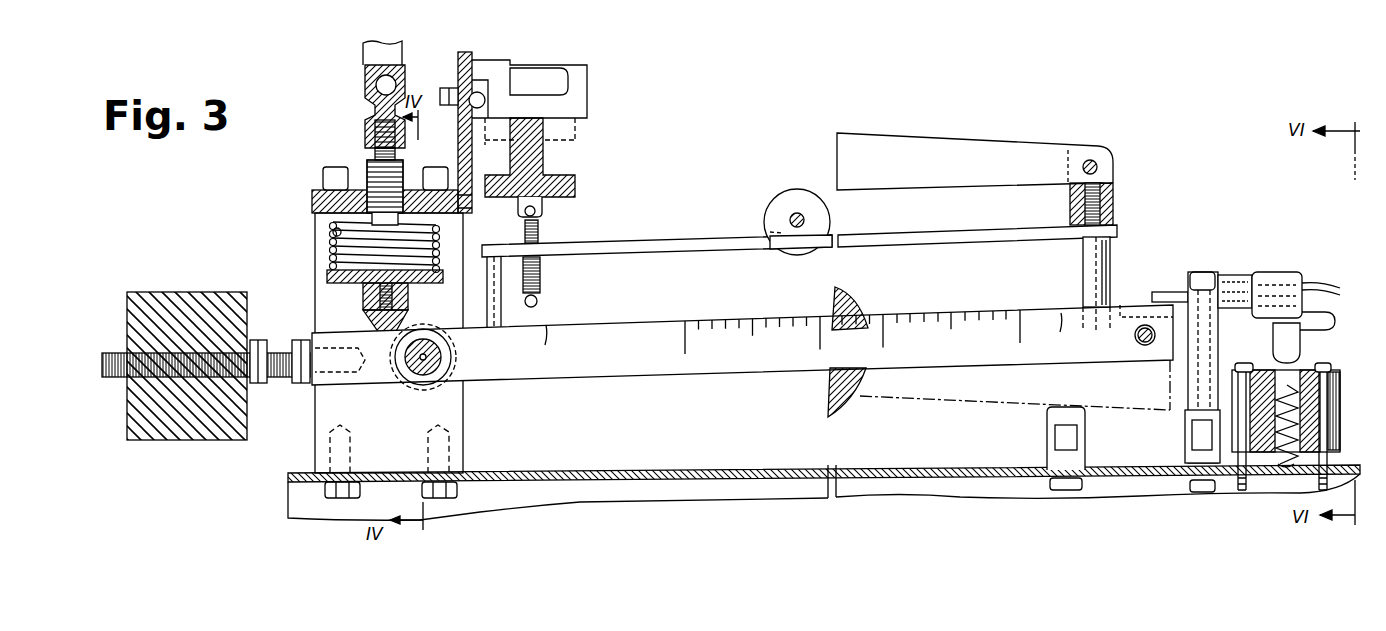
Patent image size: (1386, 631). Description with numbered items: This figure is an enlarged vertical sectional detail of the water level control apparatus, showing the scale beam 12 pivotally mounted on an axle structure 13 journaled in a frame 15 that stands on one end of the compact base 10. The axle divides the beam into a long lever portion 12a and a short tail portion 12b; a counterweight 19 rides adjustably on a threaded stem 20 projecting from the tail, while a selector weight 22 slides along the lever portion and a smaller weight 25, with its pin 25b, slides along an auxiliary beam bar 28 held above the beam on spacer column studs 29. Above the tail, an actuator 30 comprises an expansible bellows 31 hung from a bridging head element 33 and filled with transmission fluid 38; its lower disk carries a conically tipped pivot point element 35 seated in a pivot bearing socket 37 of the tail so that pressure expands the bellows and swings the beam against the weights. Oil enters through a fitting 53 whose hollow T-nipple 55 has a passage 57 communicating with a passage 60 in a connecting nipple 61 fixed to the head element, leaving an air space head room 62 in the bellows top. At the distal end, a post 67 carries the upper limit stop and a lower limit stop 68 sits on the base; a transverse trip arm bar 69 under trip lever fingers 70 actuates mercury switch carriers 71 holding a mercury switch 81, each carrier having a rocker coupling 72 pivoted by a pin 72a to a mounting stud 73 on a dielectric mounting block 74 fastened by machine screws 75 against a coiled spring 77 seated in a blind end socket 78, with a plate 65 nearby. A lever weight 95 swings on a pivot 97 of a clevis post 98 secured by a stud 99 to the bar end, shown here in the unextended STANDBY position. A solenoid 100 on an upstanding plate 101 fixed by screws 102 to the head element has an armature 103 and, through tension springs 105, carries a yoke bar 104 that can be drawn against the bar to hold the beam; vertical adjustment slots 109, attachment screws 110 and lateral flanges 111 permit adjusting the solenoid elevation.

The base 10 is at (824, 474).
The scale beam 12 is at (742, 373).
The lever portion 12a is at (827, 347).
The tail portion 12b is at (347, 384).
The axle structure 13 is at (423, 371).
The frame 15 is at (414, 355).
The counterweight 19 is at (187, 381).
The threaded stem 20 is at (206, 346).
The selector weight 22 is at (851, 404).
The smaller weight 25 is at (772, 212).
The roller pin 25b is at (782, 193).
The auxiliary beam bar 28 is at (799, 228).
The spacer column studs 29 is at (1070, 283).
The actuator 30 is at (351, 247).
The expansible bellows 31 is at (405, 270).
The bridging head element 33 is at (375, 174).
The pivot point element 35 is at (401, 311).
The pivot bearing socket 37 is at (363, 332).
The transmission fluid 38 is at (312, 231).
The fitting 53 is at (401, 36).
The T-nipple 55 is at (401, 102).
The passage 57 is at (348, 82).
The passage 60 is at (356, 126).
The connecting nipple 61 is at (407, 182).
The air space head room 62 is at (476, 178).
The plate 65 is at (1161, 274).
The post 67 is at (1178, 446).
The lower limit stop 68 is at (1046, 448).
The trip arm bar 69 is at (1138, 357).
The trip lever fingers 70 is at (1194, 355).
The mercury switch carrier 71 is at (1296, 283).
The rocker coupling 72 is at (1308, 343).
The pin 72a is at (1324, 324).
The mounting stud 73 is at (1302, 399).
The dielectric mounting block 74 is at (1352, 411).
The machine screws 75 is at (1287, 440).
The coiled spring 77 is at (1271, 489).
The blind end socket 78 is at (1265, 400).
The mercury switch 81 is at (1235, 274).
The lever weight 95 is at (932, 149).
The pivot 97 is at (1112, 158).
The clevis post 98 is at (1071, 204).
The stud 99 is at (1117, 204).
The solenoid 100 is at (560, 102).
The mounting plate 101 is at (478, 108).
The screws 102 is at (492, 276).
The armature 103 is at (548, 167).
The yoke bar 104 is at (554, 282).
The tension springs 105 is at (555, 229).
The vertical adjustment slots 109 is at (508, 78).
The attachment screws 110 is at (508, 88).
The lateral flanges 111 is at (485, 61).